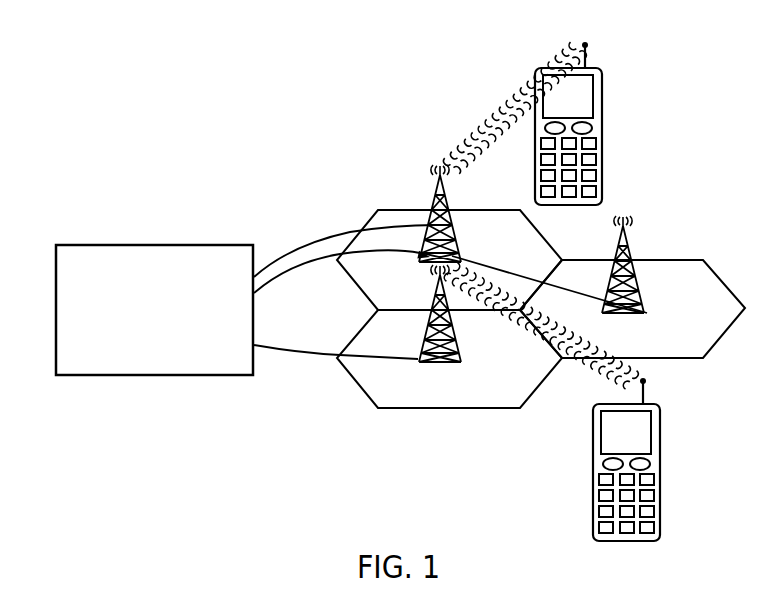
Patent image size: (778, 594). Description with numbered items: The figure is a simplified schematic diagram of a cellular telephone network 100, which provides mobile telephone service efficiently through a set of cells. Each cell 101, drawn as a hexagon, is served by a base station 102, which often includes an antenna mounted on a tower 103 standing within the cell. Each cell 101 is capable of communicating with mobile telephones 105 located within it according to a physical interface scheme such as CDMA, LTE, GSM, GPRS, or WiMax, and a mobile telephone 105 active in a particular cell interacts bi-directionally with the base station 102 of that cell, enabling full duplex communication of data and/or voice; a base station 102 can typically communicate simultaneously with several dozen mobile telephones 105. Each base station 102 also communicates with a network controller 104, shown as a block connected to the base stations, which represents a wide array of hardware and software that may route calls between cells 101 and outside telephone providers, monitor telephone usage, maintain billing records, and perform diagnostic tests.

The cellular telephone network 100 is at (126, 112).
The cell 101 is at (386, 221).
The base station 102 is at (465, 261).
The tower 103 is at (428, 206).
The network controller 104 is at (75, 245).
The mobile telephone 105 is at (604, 90).